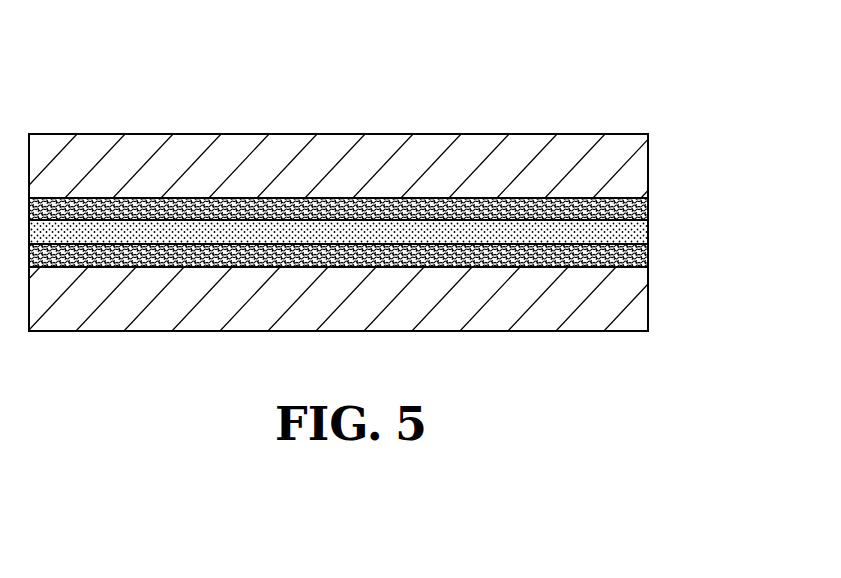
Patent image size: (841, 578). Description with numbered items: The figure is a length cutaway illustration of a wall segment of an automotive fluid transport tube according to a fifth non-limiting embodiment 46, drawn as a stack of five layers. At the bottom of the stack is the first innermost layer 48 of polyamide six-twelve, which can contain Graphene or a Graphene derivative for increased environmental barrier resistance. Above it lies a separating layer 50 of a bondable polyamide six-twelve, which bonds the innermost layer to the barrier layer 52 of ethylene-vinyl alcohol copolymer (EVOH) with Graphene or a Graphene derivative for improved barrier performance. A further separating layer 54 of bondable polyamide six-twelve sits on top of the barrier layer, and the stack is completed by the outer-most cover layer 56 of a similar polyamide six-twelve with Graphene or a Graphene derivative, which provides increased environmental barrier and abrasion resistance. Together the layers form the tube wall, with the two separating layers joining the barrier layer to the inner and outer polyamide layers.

The fifth non-limiting embodiment 46 is at (541, 72).
The first innermost layer 48 is at (649, 302).
The separating layer 50 is at (649, 257).
The barrier layer 52 is at (649, 233).
The further separating layer 54 is at (649, 212).
The outer-most cover layer 56 is at (649, 163).